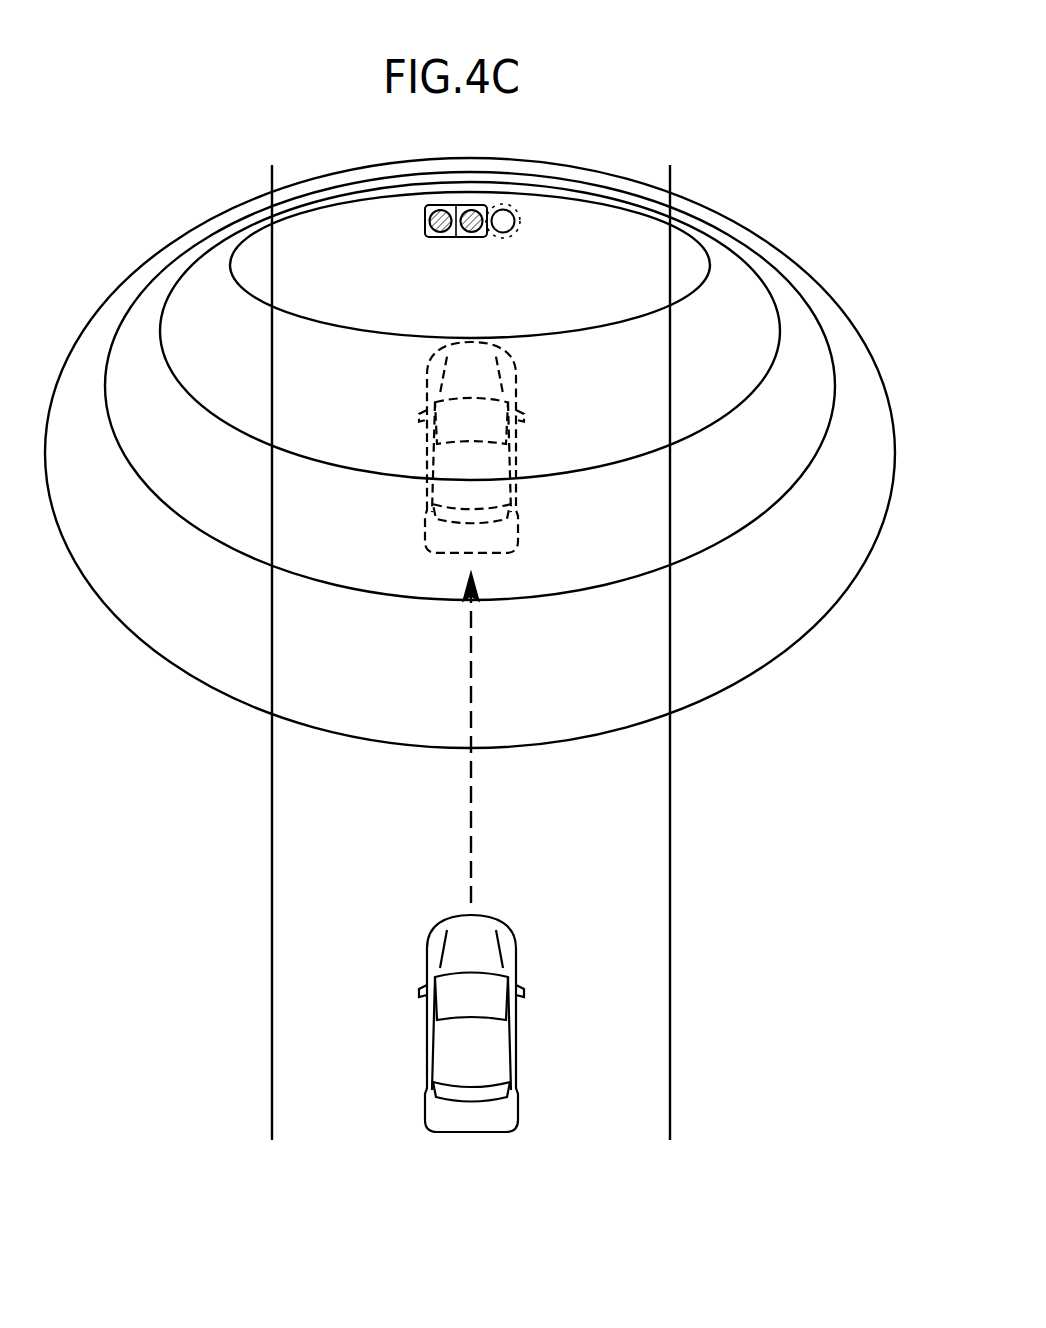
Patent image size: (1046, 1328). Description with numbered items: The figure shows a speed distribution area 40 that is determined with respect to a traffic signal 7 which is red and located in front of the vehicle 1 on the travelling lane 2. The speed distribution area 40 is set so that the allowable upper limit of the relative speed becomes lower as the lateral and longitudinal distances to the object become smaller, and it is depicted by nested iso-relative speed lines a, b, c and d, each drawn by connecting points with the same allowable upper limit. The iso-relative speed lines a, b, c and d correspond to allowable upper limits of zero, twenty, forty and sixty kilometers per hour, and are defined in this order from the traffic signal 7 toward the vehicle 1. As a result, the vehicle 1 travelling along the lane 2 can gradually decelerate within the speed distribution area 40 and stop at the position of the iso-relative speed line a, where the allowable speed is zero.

The vehicle 1 is at (518, 1045).
The travelling lane 2 is at (640, 815).
The traffic signal 7 is at (469, 238).
The speed distribution area 40 is at (461, 453).
The iso-relative speed line a is at (248, 297).
The iso-relative speed line b is at (222, 423).
The iso-relative speed line c is at (178, 513).
The iso-relative speed line d is at (122, 622).